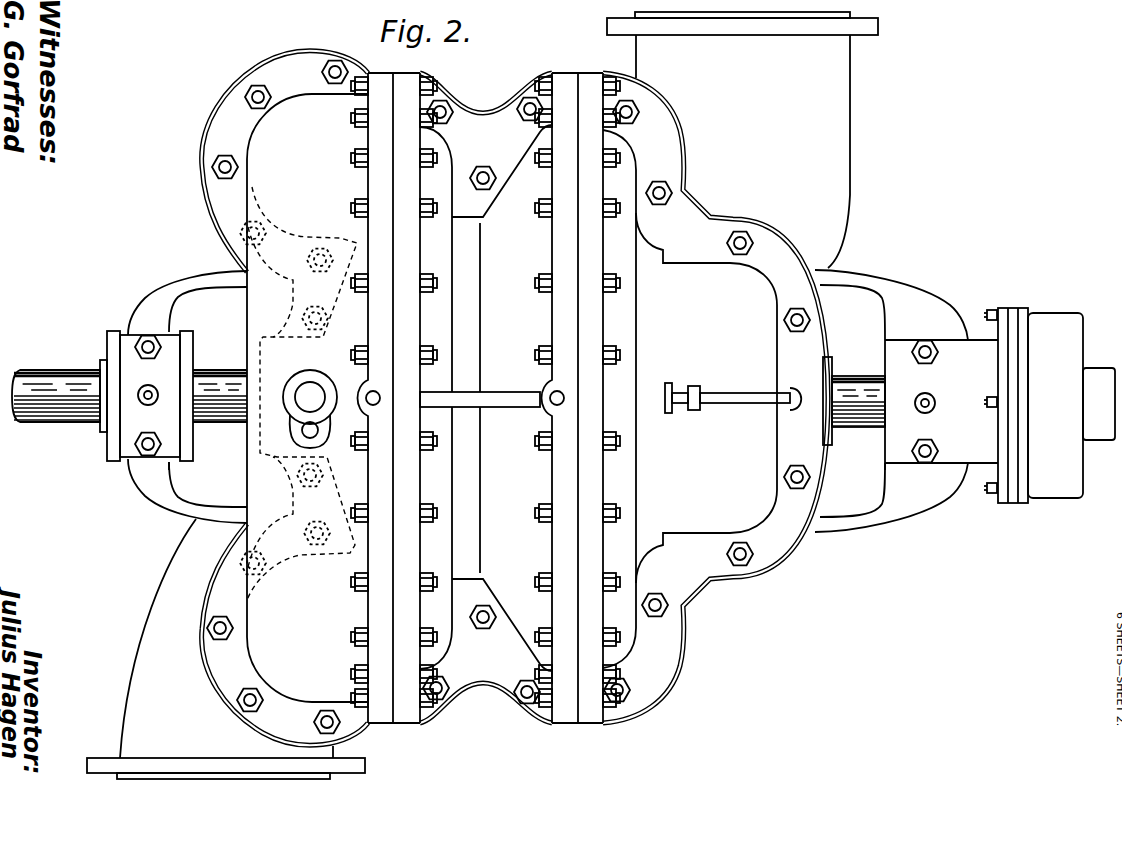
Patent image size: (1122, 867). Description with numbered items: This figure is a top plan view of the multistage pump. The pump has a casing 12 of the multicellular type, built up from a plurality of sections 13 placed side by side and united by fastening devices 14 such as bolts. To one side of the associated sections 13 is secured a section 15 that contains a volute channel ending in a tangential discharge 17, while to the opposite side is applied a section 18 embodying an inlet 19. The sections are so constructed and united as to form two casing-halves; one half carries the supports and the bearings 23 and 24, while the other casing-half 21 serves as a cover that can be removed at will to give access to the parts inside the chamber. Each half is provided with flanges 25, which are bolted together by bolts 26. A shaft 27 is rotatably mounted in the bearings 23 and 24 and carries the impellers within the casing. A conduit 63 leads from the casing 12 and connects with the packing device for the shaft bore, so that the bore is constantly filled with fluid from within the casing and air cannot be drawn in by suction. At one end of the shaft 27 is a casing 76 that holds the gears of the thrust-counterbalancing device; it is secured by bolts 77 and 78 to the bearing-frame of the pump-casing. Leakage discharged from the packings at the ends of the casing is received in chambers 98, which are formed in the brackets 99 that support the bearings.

The casing 12 is at (515, 404).
The sections 13 is at (438, 325).
The fastening devices 14 is at (539, 354).
The section 15 is at (262, 183).
The tangential discharge 17 is at (226, 649).
The section 18 is at (652, 312).
The inlet 19 is at (838, 117).
The casing-half 21 is at (653, 640).
The bearing 23 is at (890, 450).
The bearing 24 is at (188, 342).
The flanges 25 is at (768, 247).
The bolts 26 is at (664, 204).
The shaft 27 is at (852, 430).
The conduit 63 is at (738, 400).
The casing 76 is at (1047, 490).
The bolt 77 is at (995, 308).
The bolt 78 is at (992, 497).
The chambers 98 is at (548, 401).
The brackets 99 is at (171, 505).